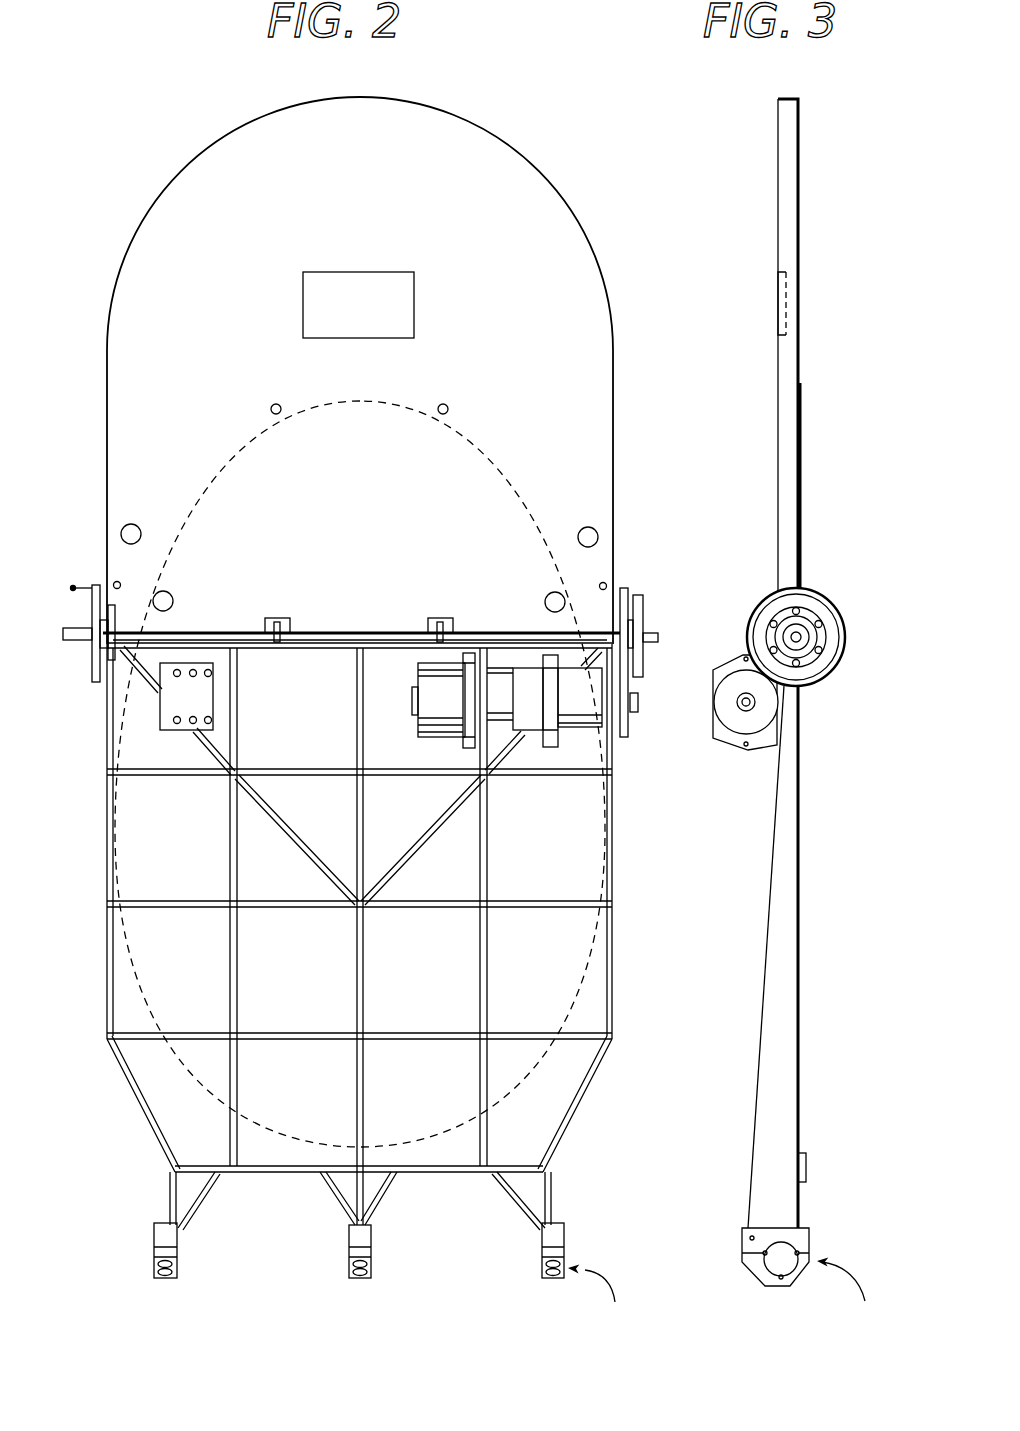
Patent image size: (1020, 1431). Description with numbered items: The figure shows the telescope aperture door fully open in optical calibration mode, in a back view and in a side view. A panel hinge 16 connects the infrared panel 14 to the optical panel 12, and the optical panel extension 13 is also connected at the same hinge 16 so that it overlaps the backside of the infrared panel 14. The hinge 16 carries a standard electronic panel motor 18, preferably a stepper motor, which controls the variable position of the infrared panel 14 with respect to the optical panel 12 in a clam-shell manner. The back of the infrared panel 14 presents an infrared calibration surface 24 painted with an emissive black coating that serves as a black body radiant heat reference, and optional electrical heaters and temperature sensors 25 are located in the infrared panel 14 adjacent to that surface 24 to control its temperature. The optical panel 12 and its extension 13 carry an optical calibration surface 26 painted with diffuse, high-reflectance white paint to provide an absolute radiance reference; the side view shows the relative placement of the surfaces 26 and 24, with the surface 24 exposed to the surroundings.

In FIG. 2, the optical panel 12 is at (628, 889).
In FIG. 3, the optical panel 12 is at (809, 986).
In FIG. 3, the optical panel extension 13 is at (801, 396).
In FIG. 2, the infrared panel 14 is at (377, 622).
In FIG. 3, the infrared panel 14 is at (773, 345).
In FIG. 2, the panel hinge 16 is at (75, 655).
In FIG. 3, the panel hinge 16 is at (840, 602).
In FIG. 2, the panel motor 18 is at (530, 683).
In FIG. 3, the panel motor 18 is at (712, 716).
In FIG. 2, the infrared calibration surface 24 is at (187, 200).
In FIG. 3, the infrared calibration surface 24 is at (778, 208).
In FIG. 2, the heaters and temperature sensors 25 is at (356, 272).
In FIG. 3, the heaters and temperature sensors 25 is at (778, 313).
In FIG. 3, the optical calibration surface 26 is at (800, 855).